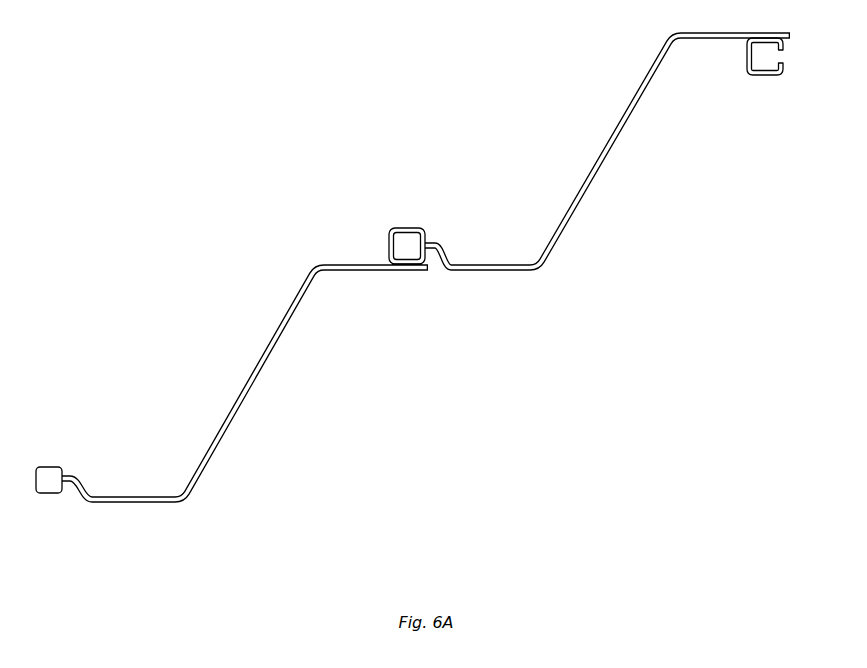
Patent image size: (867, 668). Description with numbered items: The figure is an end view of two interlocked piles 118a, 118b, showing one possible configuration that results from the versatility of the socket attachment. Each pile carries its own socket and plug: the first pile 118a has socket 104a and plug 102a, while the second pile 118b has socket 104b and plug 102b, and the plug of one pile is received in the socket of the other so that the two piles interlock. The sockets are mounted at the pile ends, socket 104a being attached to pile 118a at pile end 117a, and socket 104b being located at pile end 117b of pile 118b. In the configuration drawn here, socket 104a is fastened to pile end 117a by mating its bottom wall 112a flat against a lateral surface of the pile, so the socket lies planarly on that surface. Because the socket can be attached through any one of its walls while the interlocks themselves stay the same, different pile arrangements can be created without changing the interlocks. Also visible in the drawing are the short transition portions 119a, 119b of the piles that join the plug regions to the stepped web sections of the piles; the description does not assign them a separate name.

The plug 102a is at (53, 480).
The plug 102b is at (402, 245).
The socket 104a is at (382, 238).
The socket 104b is at (775, 78).
The bottom wall 112a is at (410, 262).
The pile end 117a is at (350, 270).
The pile end 117b is at (710, 40).
The pile 118a is at (222, 427).
The pile 118b is at (597, 165).
The first connector section 119a is at (75, 475).
The second connector section 119b is at (447, 272).